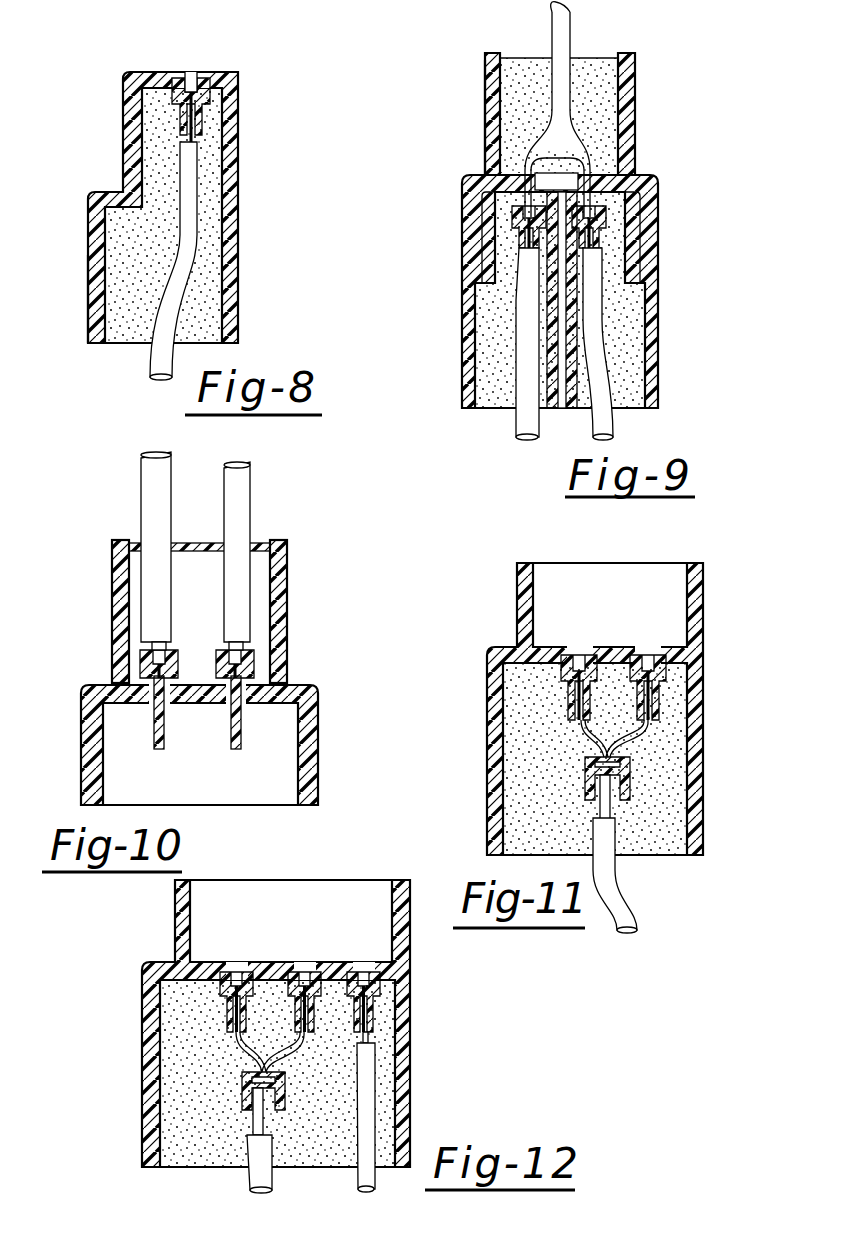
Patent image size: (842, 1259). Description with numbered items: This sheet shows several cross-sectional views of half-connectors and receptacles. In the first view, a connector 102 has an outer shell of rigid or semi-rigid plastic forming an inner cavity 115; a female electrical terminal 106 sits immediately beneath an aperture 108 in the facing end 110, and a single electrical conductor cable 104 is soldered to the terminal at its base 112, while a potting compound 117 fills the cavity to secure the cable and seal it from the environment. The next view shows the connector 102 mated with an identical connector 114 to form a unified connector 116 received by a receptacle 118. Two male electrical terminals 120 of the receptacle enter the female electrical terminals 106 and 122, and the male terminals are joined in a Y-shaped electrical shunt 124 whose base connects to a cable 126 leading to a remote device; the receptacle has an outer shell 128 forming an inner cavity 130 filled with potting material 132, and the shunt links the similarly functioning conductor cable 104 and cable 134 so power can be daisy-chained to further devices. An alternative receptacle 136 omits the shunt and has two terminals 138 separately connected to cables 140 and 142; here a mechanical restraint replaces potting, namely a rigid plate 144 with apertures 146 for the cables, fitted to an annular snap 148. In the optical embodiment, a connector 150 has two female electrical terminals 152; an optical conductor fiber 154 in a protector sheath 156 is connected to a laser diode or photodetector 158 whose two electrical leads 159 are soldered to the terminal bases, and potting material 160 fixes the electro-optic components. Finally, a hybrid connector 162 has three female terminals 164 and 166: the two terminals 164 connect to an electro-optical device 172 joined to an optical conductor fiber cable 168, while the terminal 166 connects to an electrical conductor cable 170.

In FIG. 8, the connector 102 is at (122, 187).
In FIG. 9, the connector 102 is at (462, 343).
In FIG. 8, the electrical conductor cable 104 is at (187, 273).
In FIG. 9, the electrical conductor cable 104 is at (516, 422).
In FIG. 8, the female electrical terminal 106 is at (175, 92).
In FIG. 9, the female electrical terminal 106 is at (526, 215).
In FIG. 8, the aperture 108 is at (191, 78).
In FIG. 8, the facing end 110 is at (180, 80).
In FIG. 8, the base 112 is at (197, 115).
In FIG. 8, the connector 114 is at (87, 263).
In FIG. 9, the connector 114 is at (660, 293).
In FIG. 8, the inner cavity 115 is at (122, 237).
In FIG. 9, the unified connector 116 is at (660, 358).
In FIG. 8, the potting compound 117 is at (125, 343).
In FIG. 9, the receptacle 118 is at (628, 100).
In FIG. 9, the male electrical terminals 120 is at (500, 177).
In FIG. 9, the female electrical terminal 122 is at (600, 195).
In FIG. 9, the electrical shunt 124 is at (590, 147).
In FIG. 9, the cable 126 is at (571, 32).
In FIG. 9, the outer shell 128 is at (488, 93).
In FIG. 9, the inner cavity 130 is at (596, 54).
In FIG. 9, the potting material 132 is at (520, 58).
In FIG. 9, the cable 134 is at (612, 425).
In FIG. 10, the receptacle 136 is at (295, 685).
In FIG. 10, the terminals 138 is at (222, 751).
In FIG. 10, the cable 140 is at (141, 490).
In FIG. 10, the cable 142 is at (250, 500).
In FIG. 10, the plate 144 is at (137, 542).
In FIG. 10, the apertures 146 is at (203, 543).
In FIG. 10, the annular snap 148 is at (272, 542).
In FIG. 11, the connector 150 is at (487, 677).
In FIG. 11, the female electrical terminals 152 is at (648, 663).
In FIG. 11, the optical conductor fiber 154 is at (613, 812).
In FIG. 11, the protector sheath 156 is at (637, 893).
In FIG. 11, the photodetector 158 is at (630, 780).
In FIG. 11, the electrical leads 159 is at (580, 735).
In FIG. 11, the potting material 160 is at (660, 855).
In FIG. 12, the connector 162 is at (150, 962).
In FIG. 12, the female electrical terminals 164 is at (304, 978).
In FIG. 12, the female electrical terminal 166 is at (364, 975).
In FIG. 12, the optical conductor fiber cable 168 is at (247, 1124).
In FIG. 12, the electrical conductor cable 170 is at (375, 1115).
In FIG. 12, the electro-optical device 172 is at (245, 1100).